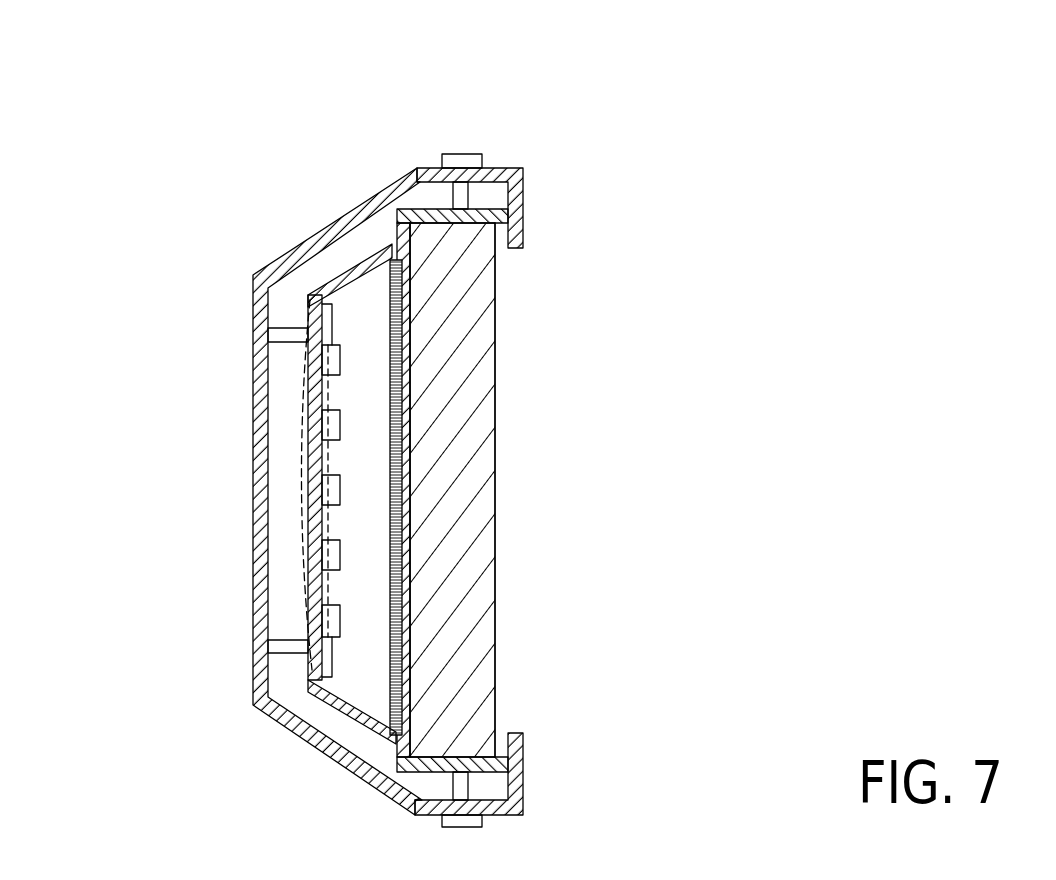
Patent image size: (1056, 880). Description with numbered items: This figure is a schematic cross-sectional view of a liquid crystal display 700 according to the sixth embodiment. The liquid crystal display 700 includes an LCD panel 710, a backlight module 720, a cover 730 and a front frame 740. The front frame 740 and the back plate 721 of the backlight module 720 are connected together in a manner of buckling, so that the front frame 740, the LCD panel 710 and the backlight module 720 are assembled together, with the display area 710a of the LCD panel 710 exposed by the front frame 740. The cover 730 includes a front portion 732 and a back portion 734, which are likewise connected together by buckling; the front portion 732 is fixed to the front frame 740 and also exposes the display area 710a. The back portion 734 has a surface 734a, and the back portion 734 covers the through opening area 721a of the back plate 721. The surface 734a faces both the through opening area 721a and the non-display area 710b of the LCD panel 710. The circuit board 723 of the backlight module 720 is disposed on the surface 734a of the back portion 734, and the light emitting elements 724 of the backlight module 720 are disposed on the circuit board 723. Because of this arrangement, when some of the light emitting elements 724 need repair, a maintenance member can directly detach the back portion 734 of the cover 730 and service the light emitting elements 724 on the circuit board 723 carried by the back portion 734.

The liquid crystal display 700 is at (448, 420).
The LCD panel 710 is at (531, 490).
The display area 710a is at (499, 332).
The non-display area 710b is at (404, 460).
The backlight module 720 is at (328, 262).
The back plate 721 is at (338, 694).
The through opening area 721a is at (350, 408).
The circuit board 723 is at (315, 452).
The light emitting elements 724 is at (330, 620).
The cover 730 is at (469, 420).
The front portion 732 is at (488, 167).
The back portion 734 is at (393, 173).
The surface 734a is at (272, 528).
The front frame 740 is at (483, 211).